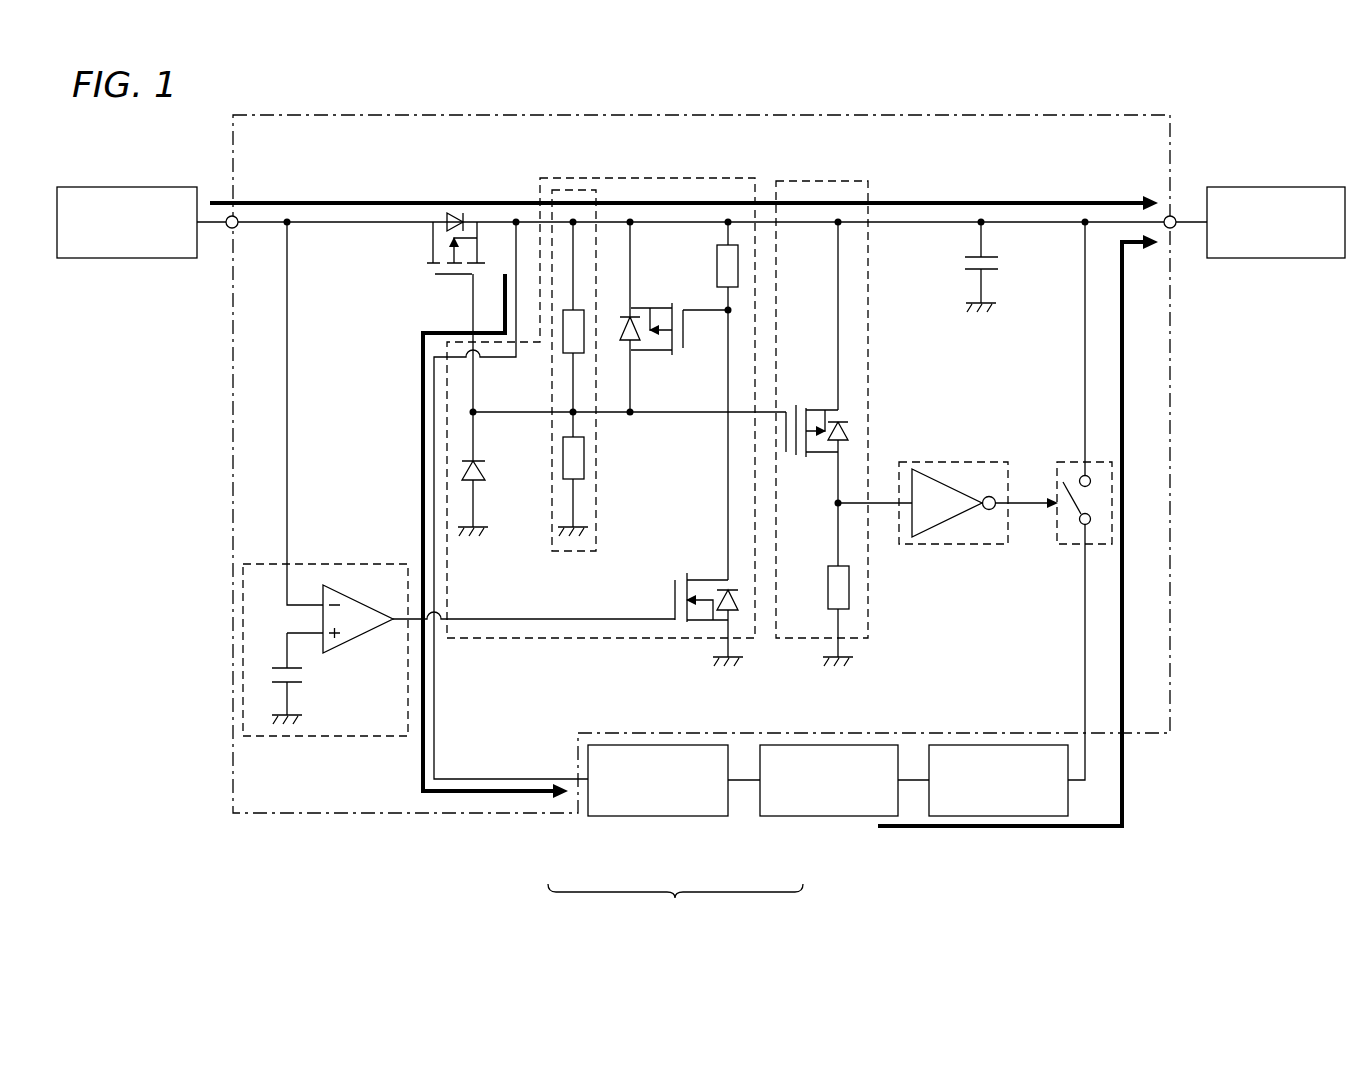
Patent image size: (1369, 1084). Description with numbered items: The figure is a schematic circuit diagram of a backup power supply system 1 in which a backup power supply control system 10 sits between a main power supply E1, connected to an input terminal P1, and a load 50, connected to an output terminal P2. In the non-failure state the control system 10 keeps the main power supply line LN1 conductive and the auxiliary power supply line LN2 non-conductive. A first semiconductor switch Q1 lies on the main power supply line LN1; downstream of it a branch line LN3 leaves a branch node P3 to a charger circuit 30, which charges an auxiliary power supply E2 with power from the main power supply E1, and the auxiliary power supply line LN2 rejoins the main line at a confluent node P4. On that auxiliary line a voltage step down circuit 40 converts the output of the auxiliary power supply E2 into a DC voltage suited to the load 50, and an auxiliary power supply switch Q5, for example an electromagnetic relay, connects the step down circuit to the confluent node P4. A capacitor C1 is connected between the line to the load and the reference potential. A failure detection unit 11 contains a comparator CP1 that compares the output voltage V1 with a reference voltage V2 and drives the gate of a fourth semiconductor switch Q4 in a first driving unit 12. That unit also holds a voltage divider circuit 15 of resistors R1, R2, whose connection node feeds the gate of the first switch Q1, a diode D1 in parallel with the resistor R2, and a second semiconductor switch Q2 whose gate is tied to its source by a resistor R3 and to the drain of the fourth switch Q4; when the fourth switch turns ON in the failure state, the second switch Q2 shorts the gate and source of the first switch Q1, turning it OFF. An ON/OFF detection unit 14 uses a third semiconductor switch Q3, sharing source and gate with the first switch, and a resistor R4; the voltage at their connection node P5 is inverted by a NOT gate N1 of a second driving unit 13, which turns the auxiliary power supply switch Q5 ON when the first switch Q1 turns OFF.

The backup power supply system 1 is at (675, 911).
The backup power supply control system 10 is at (536, 815).
The failure detection unit 11 is at (350, 562).
The first driving unit 12 is at (700, 178).
The second driving unit 13 is at (927, 546).
The ON/OFF detection unit 14 is at (840, 181).
The voltage divider circuit 15 is at (583, 554).
The charger circuit 30 is at (636, 745).
The voltage step down circuit 40 is at (955, 817).
The load 50 is at (1305, 190).
The main power supply E1 is at (82, 193).
The auxiliary power supply E2 is at (790, 808).
The input terminal P1 is at (237, 227).
The output terminal P2 is at (1175, 216).
The branch node P3 is at (515, 216).
The confluent node P4 is at (1078, 229).
The connection node P5 is at (836, 502).
The output voltage V1 is at (290, 228).
The reference voltage V2 is at (304, 684).
The main power supply line LN1 is at (918, 198).
The auxiliary power supply line LN2 is at (1070, 828).
The branch line LN3 is at (420, 771).
The first semiconductor switch Q1 is at (427, 237).
The second semiconductor switch Q2 is at (648, 358).
The third semiconductor switch Q3 is at (816, 404).
The fourth semiconductor switch Q4 is at (699, 570).
The auxiliary power supply switch Q5 is at (1058, 458).
The resistor R1 is at (563, 352).
The resistor R2 is at (586, 459).
The resistor R3 is at (715, 267).
The resistor R4 is at (828, 580).
The capacitor C1 is at (963, 262).
The diode D1 is at (486, 473).
The comparator CP1 is at (356, 641).
The NOT gate N1 is at (948, 468).